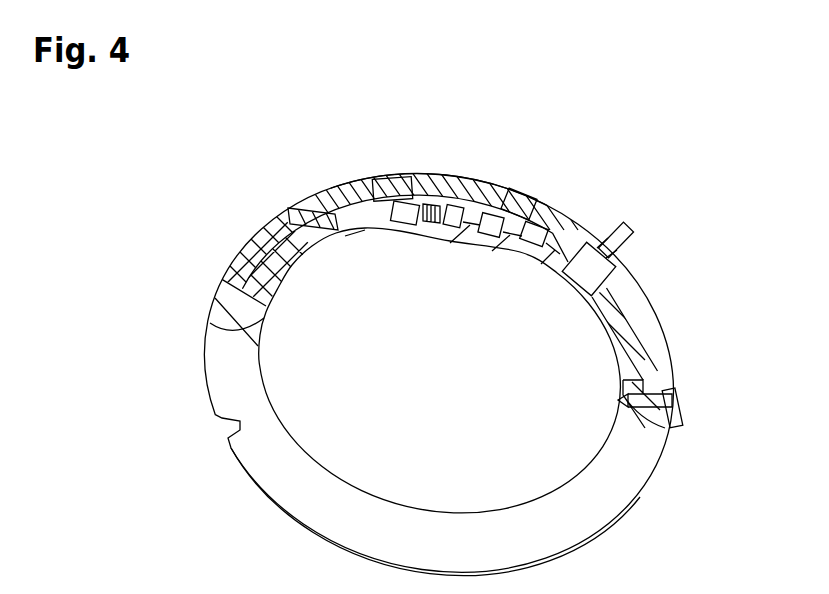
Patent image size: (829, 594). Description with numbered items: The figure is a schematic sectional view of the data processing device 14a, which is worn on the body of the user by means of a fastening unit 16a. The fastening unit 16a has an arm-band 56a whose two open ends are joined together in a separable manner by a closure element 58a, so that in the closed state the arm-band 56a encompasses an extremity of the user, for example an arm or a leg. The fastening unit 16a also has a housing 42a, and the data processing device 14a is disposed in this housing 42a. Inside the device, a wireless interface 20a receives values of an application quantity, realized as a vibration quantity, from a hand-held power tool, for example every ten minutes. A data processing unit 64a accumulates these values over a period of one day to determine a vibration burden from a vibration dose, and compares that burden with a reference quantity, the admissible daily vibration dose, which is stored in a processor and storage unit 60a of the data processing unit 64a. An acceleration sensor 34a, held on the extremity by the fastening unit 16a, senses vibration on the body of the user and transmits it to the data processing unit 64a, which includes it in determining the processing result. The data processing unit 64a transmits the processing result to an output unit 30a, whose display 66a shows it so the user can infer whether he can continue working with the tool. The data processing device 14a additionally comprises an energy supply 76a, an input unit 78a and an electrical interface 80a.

The data processing device 14a is at (318, 150).
The fastening unit 16a is at (180, 368).
The arm-band 56a is at (312, 508).
The output unit 30a is at (370, 148).
The acceleration sensor 34a is at (457, 204).
The data processing unit 64a is at (300, 187).
The electrical interface 80a is at (270, 212).
The energy supply 76a is at (230, 281).
The processor and storage unit 60a is at (413, 203).
The wireless interface 20a is at (500, 215).
The display 66a is at (523, 188).
The input unit 78a is at (625, 228).
The housing 42a is at (647, 333).
The closure element 58a is at (687, 410).